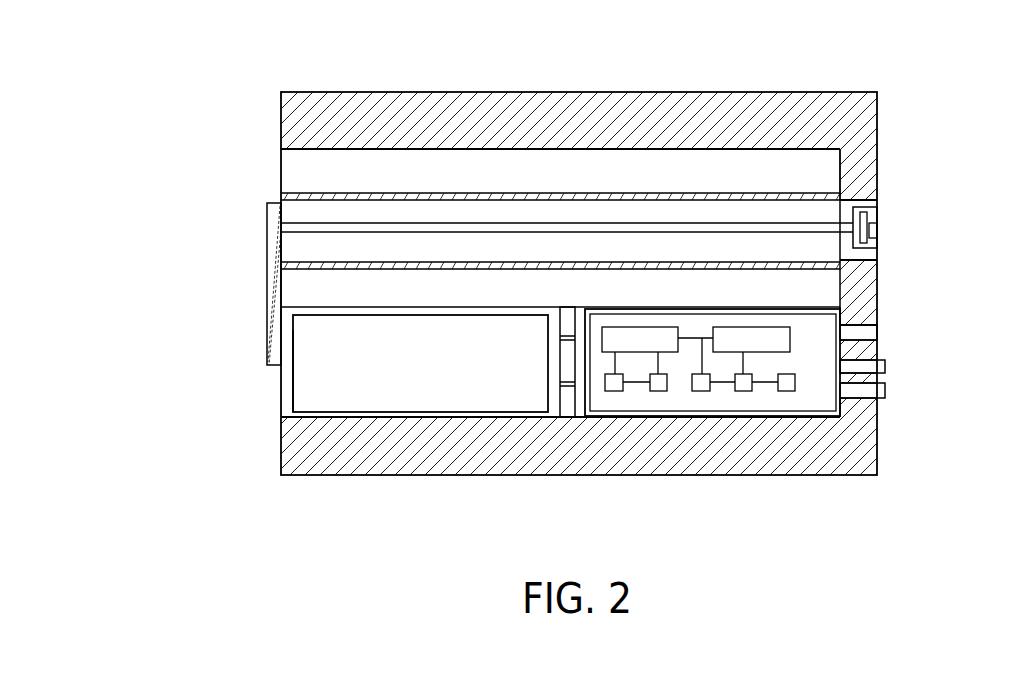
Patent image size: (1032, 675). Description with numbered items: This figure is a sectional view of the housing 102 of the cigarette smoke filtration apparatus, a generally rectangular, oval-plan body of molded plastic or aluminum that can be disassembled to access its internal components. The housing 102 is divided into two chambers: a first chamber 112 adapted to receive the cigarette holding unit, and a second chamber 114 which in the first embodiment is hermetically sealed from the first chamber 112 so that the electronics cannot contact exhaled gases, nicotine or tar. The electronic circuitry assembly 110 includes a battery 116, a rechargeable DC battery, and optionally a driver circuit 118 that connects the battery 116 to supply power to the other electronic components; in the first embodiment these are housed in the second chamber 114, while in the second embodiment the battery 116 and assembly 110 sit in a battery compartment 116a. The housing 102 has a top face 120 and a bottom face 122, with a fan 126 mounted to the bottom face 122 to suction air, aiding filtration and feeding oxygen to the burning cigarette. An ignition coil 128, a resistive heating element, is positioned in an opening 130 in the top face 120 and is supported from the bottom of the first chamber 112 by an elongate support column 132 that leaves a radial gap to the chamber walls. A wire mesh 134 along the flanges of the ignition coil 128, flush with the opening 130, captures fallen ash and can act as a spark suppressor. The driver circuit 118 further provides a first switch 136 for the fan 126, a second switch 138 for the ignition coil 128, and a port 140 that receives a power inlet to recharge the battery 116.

The housing 102 is at (915, 73).
The electronic circuitry assembly 110 is at (549, 406).
The first chamber 112 is at (695, 155).
The second chamber 114 is at (791, 428).
The battery 116 is at (308, 380).
The battery compartment 116a is at (288, 404).
The driver circuit 118 is at (647, 393).
The top face 120 is at (878, 163).
The bottom face 122 is at (281, 116).
The fan 126 is at (268, 258).
The ignition coil 128 is at (878, 240).
The opening 130 is at (893, 262).
The support column 132 is at (268, 220).
The wire mesh 134 is at (878, 207).
The first switch 136 is at (885, 388).
The second switch 138 is at (885, 365).
The port 140 is at (878, 330).